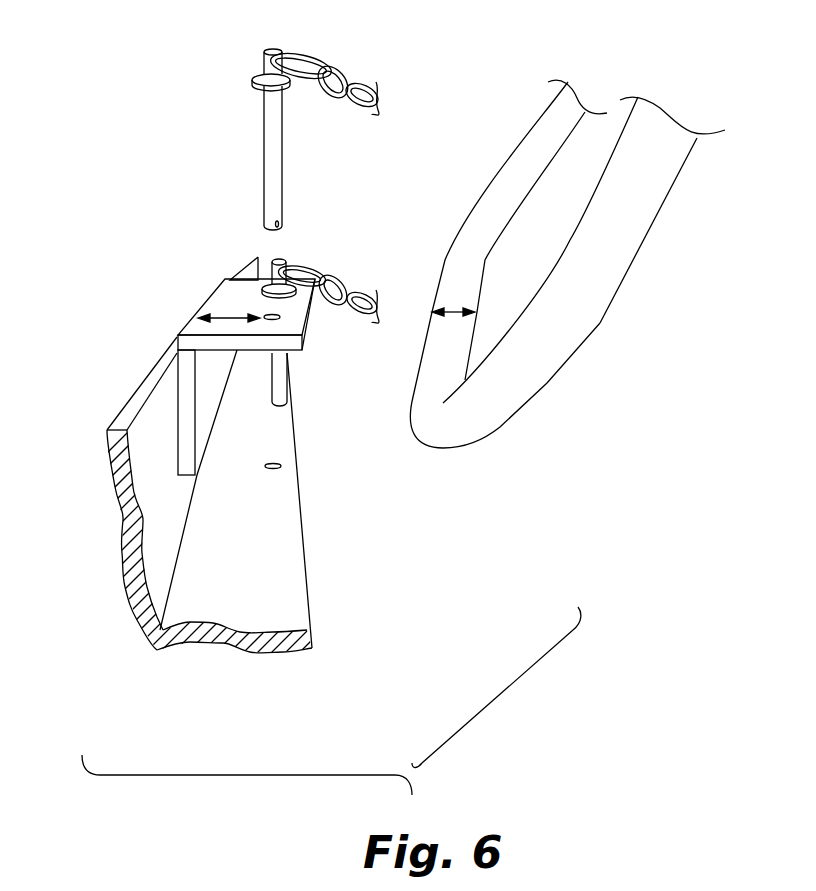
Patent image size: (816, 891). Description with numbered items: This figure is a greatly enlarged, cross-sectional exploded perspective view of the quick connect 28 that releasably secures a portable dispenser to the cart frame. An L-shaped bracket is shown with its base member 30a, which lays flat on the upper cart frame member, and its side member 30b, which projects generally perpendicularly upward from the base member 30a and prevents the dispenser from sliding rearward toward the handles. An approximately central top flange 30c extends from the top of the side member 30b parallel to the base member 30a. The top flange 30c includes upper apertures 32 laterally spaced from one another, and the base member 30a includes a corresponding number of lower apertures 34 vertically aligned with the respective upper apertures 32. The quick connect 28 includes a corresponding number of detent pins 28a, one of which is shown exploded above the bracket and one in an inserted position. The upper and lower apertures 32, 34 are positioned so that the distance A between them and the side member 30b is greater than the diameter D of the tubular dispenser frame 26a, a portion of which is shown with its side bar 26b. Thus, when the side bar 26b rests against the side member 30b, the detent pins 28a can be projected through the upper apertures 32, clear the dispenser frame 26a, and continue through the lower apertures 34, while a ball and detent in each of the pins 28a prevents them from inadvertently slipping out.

The tubular dispenser frame 26a is at (597, 270).
The side bar 26b is at (443, 352).
The quick connect 28 is at (284, 212).
The detent pins 28a is at (272, 137).
The base member 30a is at (282, 598).
The side member 30b is at (127, 532).
The top flange 30c is at (233, 293).
The upper apertures 32 is at (282, 317).
The lower apertures 34 is at (280, 465).
The distance A is at (230, 317).
The diameter D is at (453, 307).